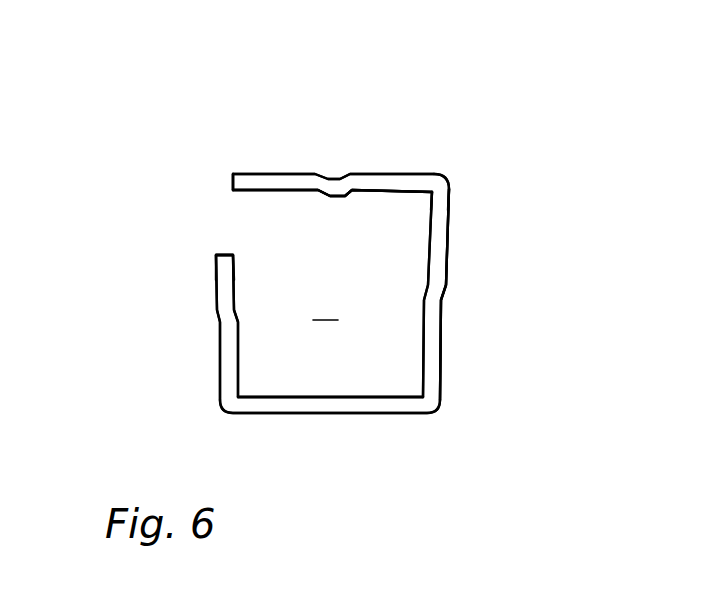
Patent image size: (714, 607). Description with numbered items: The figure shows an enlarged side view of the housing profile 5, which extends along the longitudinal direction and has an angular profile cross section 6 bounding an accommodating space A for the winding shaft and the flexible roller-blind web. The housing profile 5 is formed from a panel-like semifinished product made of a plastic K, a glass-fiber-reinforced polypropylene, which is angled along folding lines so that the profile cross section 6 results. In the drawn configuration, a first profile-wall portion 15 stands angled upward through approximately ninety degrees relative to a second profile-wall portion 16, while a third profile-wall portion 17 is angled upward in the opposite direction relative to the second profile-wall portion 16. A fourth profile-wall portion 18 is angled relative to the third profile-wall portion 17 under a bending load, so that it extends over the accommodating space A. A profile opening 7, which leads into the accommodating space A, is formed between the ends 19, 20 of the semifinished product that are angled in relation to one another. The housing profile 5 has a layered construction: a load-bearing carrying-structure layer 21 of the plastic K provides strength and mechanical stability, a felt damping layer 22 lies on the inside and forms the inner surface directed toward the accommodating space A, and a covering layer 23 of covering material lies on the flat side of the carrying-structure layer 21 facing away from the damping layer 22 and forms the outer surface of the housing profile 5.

The housing profile 5 is at (342, 133).
The fourth profile-wall portion 18 is at (303, 168).
The covering layer 23 is at (417, 172).
The end of the panel-like semifinished product 20 is at (233, 182).
The profile opening 7 is at (227, 222).
The end of the panel-like semifinished product 19 is at (223, 254).
The first profile-wall portion 15 is at (207, 335).
The angular profile cross section 6 is at (435, 260).
The third profile-wall portion 17 is at (458, 318).
The damping layer 22 is at (375, 193).
The second profile-wall portion 16 is at (327, 430).
The carrying-structure layer 21 is at (383, 402).
The plastic K is at (383, 447).
The accommodating space A is at (325, 297).